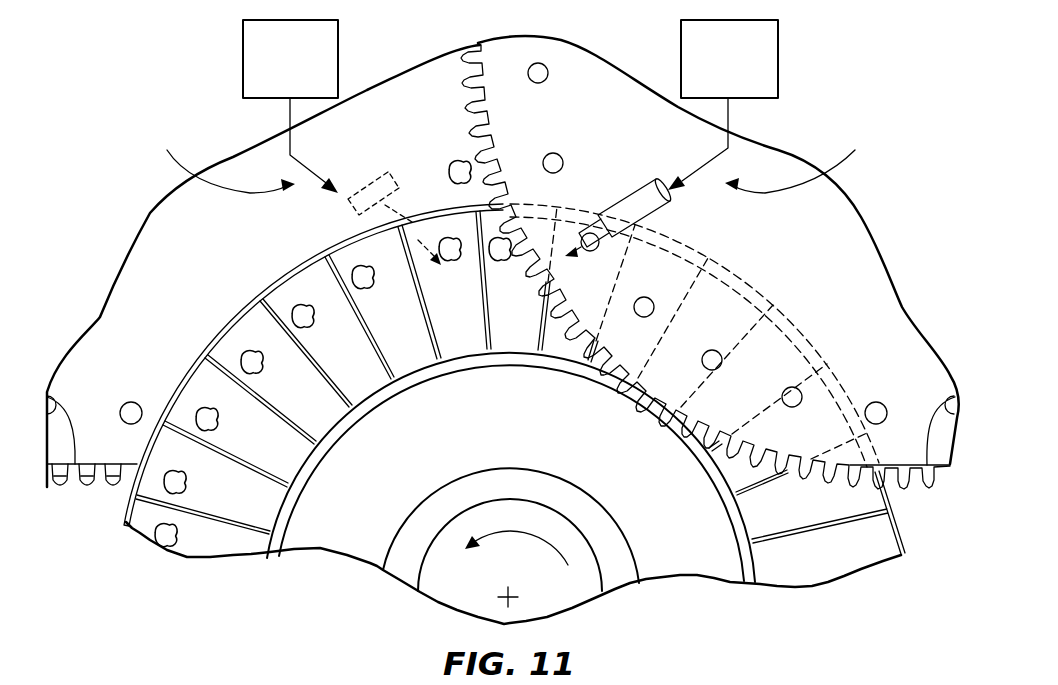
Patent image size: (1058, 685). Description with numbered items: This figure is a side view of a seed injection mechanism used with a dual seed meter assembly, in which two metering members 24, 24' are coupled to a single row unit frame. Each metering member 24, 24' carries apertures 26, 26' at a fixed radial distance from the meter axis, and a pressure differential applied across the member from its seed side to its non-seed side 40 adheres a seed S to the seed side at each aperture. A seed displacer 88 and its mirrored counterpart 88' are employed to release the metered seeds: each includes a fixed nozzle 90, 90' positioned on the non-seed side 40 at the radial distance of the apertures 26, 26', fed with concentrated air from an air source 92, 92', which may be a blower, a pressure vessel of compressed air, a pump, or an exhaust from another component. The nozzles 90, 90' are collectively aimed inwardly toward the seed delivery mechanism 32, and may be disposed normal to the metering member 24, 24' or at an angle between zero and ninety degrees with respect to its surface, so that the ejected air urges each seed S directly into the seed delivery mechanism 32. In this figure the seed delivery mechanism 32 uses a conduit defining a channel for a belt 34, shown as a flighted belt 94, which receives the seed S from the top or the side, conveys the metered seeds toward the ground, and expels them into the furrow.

The metering member 24' is at (263, 266).
The metering member 24 is at (710, 262).
The apertures 26' is at (92, 476).
The apertures 26 is at (911, 476).
The seed delivery mechanism 32 is at (187, 573).
The seed S is at (160, 540).
The belt 34 is at (760, 562).
The flighted belt 94 is at (802, 530).
The non-seed side 40 is at (826, 272).
The nozzle 90 is at (619, 197).
The nozzle 90' is at (394, 196).
The air source 92 is at (760, 105).
The air source 92' is at (251, 106).
The seed displacer 88 is at (802, 160).
The seed displacer 88' is at (216, 160).